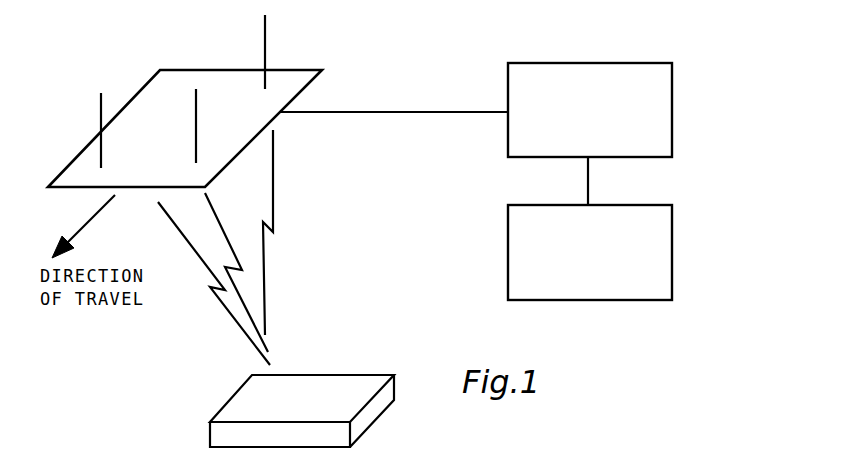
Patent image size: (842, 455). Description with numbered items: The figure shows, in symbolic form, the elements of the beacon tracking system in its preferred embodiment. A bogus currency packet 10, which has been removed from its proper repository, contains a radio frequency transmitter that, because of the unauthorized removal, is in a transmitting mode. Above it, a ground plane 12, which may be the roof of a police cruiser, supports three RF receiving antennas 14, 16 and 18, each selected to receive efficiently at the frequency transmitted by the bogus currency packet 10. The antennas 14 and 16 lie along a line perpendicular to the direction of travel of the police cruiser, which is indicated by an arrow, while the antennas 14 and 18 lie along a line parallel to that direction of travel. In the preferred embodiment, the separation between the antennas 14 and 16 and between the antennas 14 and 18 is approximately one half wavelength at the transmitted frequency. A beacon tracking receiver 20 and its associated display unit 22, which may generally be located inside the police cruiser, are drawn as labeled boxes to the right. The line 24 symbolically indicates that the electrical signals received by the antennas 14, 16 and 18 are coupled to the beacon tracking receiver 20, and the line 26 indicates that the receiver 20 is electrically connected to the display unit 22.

The bogus currency packet 10 is at (313, 375).
The ground plane 12 is at (303, 70).
The RF receiving antenna 14 is at (196, 108).
The RF receiving antenna 16 is at (101, 112).
The RF receiving antenna 18 is at (265, 34).
The beacon tracking receiver 20 is at (572, 63).
The display unit 22 is at (672, 247).
The line 24 is at (380, 113).
The line 26 is at (588, 180).